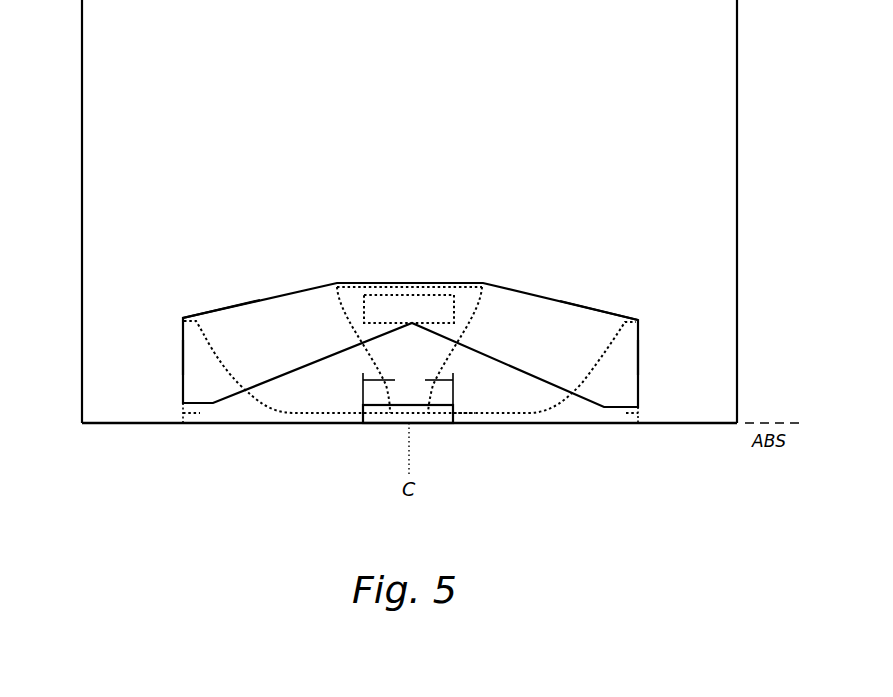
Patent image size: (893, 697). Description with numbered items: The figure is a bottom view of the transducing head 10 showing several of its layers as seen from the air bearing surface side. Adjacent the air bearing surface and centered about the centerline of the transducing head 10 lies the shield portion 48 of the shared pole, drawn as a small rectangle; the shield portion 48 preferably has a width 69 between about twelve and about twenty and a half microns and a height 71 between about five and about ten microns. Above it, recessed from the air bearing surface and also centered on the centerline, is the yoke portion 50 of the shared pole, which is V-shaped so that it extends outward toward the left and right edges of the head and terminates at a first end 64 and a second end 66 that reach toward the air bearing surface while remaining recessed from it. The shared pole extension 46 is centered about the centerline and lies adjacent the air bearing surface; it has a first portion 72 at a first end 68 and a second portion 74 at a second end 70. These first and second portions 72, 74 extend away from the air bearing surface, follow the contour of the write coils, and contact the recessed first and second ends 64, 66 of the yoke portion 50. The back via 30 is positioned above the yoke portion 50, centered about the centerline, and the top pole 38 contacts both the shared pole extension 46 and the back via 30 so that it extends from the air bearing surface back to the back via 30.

The transducing head 10 is at (68, 206).
The back via 30 is at (413, 303).
The top pole 38 is at (470, 302).
The shared pole extension 46 is at (238, 406).
The shield portion 48 is at (439, 424).
The yoke portion 50 is at (278, 312).
The first end 64 is at (586, 331).
The second end 66 is at (209, 322).
The first end 68 is at (628, 415).
The width 69 is at (408, 388).
The second end 70 is at (181, 409).
The height 71 is at (463, 413).
The first portion 72 is at (622, 367).
The second portion 74 is at (192, 357).